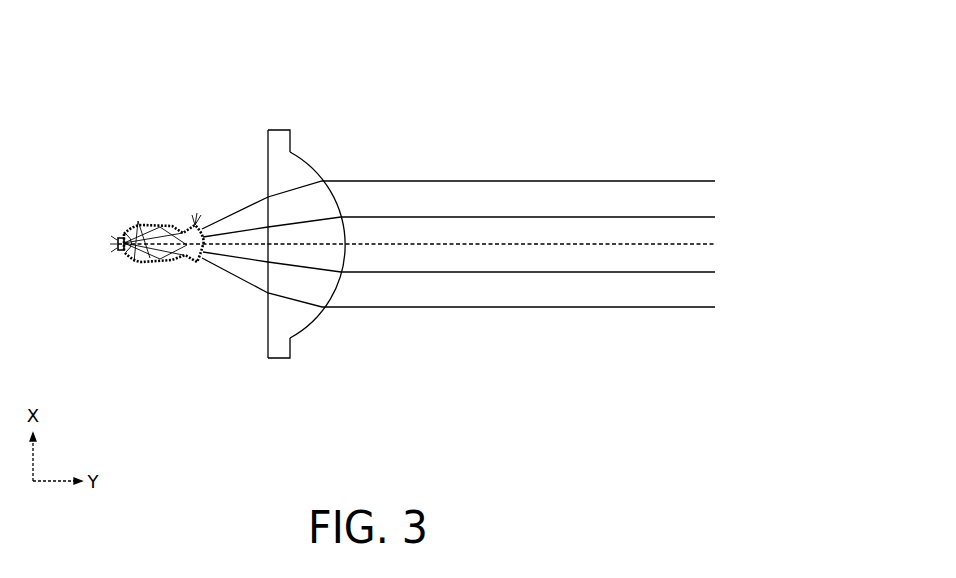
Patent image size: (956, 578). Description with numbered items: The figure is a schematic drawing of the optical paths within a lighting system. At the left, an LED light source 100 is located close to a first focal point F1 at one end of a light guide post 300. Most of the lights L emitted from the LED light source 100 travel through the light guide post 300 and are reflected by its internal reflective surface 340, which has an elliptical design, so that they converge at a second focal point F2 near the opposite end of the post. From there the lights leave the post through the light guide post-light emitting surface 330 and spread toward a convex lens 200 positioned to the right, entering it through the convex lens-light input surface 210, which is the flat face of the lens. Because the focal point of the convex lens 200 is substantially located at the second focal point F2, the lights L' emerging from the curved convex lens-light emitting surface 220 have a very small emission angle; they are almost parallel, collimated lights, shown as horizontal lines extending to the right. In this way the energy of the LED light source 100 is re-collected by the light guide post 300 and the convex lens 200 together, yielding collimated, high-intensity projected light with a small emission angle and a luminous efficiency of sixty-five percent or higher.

The LED light source 100 is at (117, 251).
The convex lens 200 is at (292, 199).
The convex lens-light input surface 210 is at (267, 162).
The convex lens-light emitting surface 220 is at (320, 174).
The light guide post 300 is at (163, 280).
The light guide post-light emitting surface 330 is at (199, 223).
The internal reflective surface 340 is at (131, 263).
The first focal point F1 is at (122, 237).
The second focal point F2 is at (194, 262).
The lights L is at (180, 305).
The lights L' is at (523, 139).